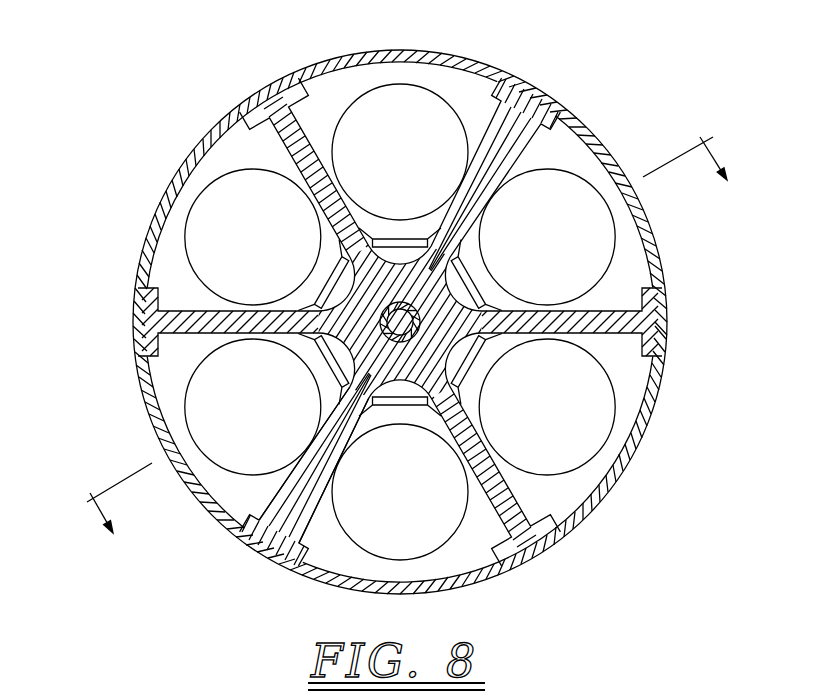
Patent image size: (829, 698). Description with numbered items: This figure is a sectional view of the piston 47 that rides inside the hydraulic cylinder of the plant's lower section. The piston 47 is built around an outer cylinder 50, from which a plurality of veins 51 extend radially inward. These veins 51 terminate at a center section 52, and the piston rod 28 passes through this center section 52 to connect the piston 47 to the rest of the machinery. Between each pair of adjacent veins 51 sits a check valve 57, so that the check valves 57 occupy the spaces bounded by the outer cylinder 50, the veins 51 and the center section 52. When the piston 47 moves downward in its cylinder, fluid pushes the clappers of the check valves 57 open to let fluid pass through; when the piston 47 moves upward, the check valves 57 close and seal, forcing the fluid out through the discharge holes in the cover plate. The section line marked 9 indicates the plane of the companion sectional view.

The piston 47 is at (112, 369).
The outer cylinder 50 is at (181, 482).
The veins 51 is at (283, 502).
The center section 52 is at (398, 378).
The check valves 57 is at (476, 92).
The piston rod 28 is at (391, 311).
The section line 9- 9 is at (413, 347).